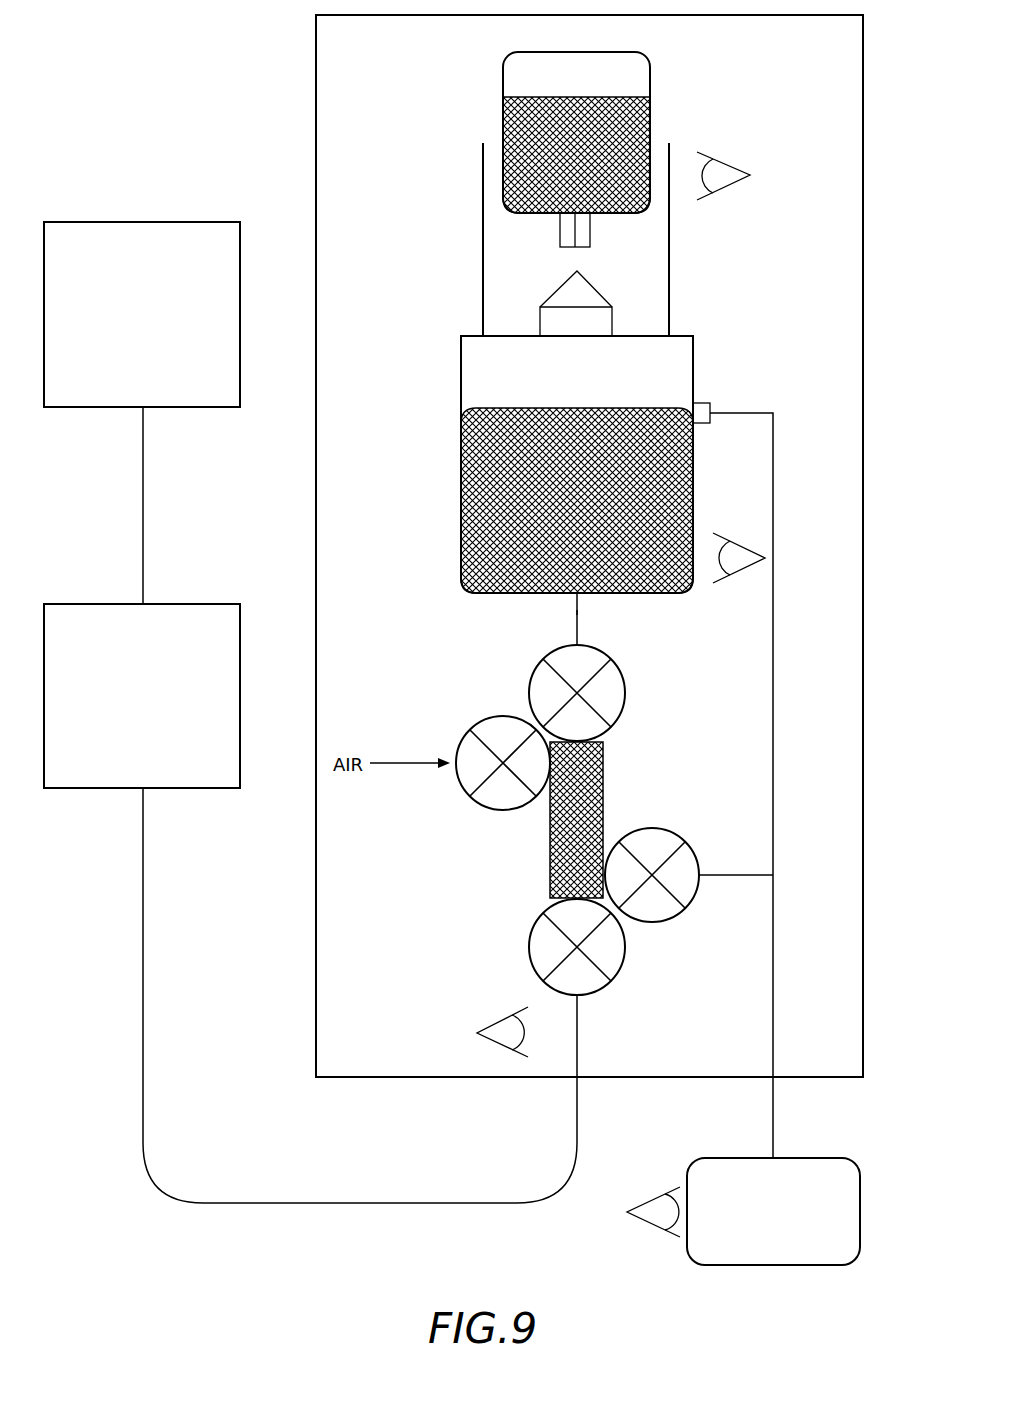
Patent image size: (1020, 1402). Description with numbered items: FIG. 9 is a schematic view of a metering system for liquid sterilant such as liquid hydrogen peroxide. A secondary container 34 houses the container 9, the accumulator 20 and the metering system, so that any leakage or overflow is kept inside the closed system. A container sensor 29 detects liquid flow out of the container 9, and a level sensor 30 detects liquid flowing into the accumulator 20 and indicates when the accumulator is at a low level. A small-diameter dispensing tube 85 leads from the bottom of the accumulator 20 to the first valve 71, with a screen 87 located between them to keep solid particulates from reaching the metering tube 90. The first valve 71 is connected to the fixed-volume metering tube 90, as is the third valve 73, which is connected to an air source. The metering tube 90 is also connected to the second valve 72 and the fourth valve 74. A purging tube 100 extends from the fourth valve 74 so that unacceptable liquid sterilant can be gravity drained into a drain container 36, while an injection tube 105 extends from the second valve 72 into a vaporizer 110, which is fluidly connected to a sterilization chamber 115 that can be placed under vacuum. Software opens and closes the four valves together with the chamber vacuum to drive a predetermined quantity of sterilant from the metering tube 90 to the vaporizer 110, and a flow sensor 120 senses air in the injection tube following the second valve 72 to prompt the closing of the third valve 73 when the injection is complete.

The container 9 is at (652, 100).
The container sensor 29 is at (732, 185).
The sterilization chamber 115 is at (180, 222).
The vaporizer 110 is at (180, 604).
The accumulator 20 is at (462, 393).
The level sensor 30 is at (740, 570).
The screen 87 is at (572, 595).
The dispensing tube 85 is at (578, 617).
The valve #1 71 is at (617, 725).
The valve #3 73 is at (485, 810).
The valve #4 74 is at (670, 922).
The valve #2 72 is at (604, 983).
The metering tube 90 is at (552, 850).
The purging tube 100 is at (717, 875).
The secondary container 34 is at (863, 798).
The flow sensor 120 is at (490, 1038).
The injection tube 105 is at (257, 1203).
The drain container 36 is at (690, 1258).